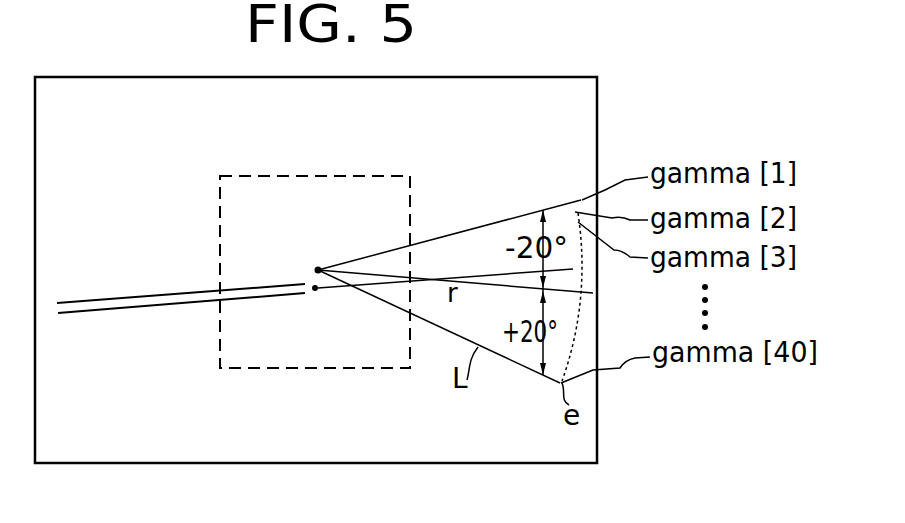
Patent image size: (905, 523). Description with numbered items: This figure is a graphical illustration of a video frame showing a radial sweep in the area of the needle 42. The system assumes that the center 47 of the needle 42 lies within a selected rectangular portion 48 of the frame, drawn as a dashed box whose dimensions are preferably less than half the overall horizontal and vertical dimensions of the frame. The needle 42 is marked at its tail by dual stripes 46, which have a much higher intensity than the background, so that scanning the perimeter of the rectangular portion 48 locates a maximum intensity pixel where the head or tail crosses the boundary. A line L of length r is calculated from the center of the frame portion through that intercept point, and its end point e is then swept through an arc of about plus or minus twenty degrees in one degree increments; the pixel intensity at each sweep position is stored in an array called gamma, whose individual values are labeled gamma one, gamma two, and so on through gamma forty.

The needle 42 is at (181, 285).
The dual stripes 46 is at (148, 312).
The center of the needle 47 is at (315, 292).
The rectangular portion of the frame 48 is at (278, 370).